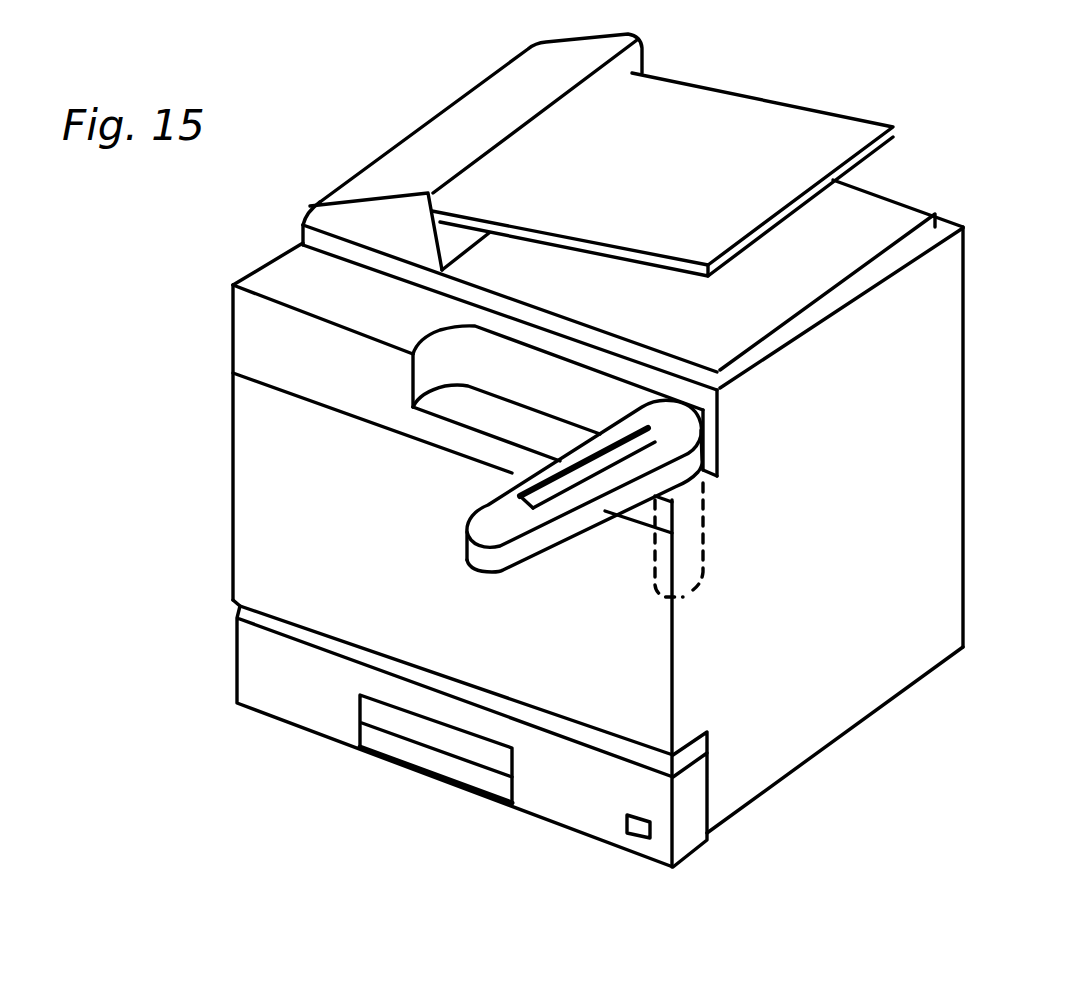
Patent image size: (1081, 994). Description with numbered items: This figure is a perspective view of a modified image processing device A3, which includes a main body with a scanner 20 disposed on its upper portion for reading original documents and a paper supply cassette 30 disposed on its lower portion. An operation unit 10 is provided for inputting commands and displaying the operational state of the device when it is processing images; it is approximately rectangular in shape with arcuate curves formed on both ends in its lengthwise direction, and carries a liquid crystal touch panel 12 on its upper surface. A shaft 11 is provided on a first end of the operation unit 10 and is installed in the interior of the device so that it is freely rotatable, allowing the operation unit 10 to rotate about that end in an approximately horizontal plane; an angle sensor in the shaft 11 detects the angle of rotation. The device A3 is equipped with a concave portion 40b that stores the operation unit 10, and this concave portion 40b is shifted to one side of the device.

The image processing device A3 is at (918, 165).
The scanner 20 is at (663, 167).
The concave portion 40b is at (467, 416).
The operation unit 10 is at (497, 518).
The liquid crystal touch panel 12 is at (563, 495).
The shaft 11 is at (706, 582).
The paper supply cassette 30 is at (650, 810).